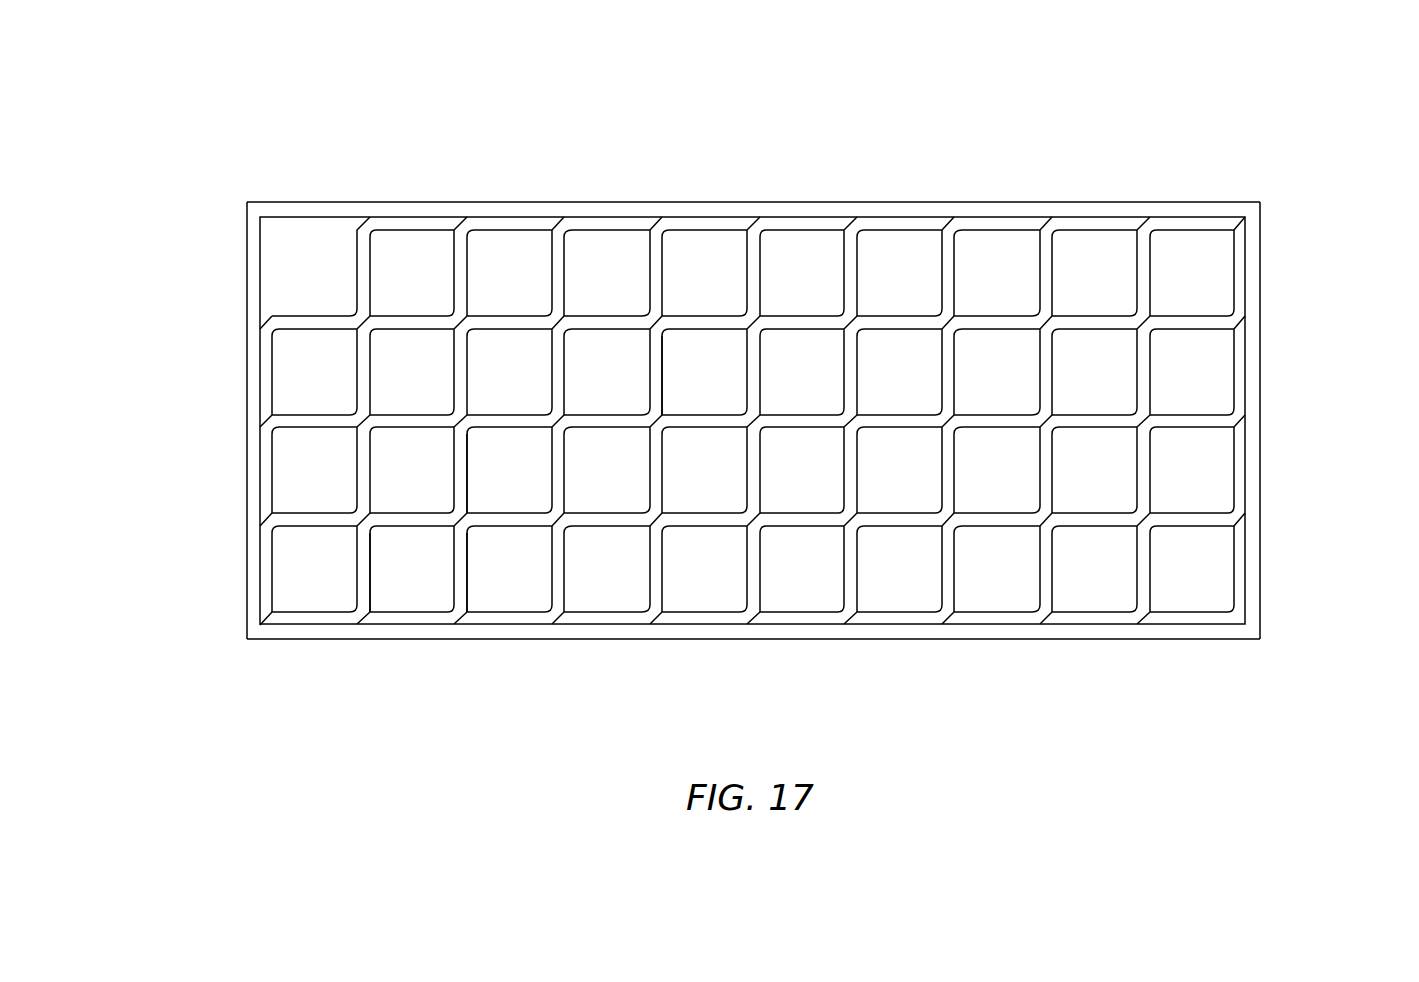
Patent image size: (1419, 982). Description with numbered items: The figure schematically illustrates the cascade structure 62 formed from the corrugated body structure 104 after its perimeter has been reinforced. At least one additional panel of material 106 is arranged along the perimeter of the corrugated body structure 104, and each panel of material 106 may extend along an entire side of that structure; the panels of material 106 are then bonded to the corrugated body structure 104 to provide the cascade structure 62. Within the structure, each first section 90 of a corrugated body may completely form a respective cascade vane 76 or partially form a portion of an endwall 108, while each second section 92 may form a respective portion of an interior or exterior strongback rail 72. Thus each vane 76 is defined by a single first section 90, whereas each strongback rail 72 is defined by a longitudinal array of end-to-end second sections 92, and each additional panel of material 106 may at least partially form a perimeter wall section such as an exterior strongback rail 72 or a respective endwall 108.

The cascade structure 62 is at (1222, 152).
The strongback rail 72 is at (784, 423).
The cascade vane 76 is at (663, 364).
The first section 90 is at (526, 483).
The second section 92 is at (809, 524).
The corrugated body structure 104 is at (338, 243).
The additional panel of material 106 is at (426, 208).
The endwall 108 is at (237, 482).